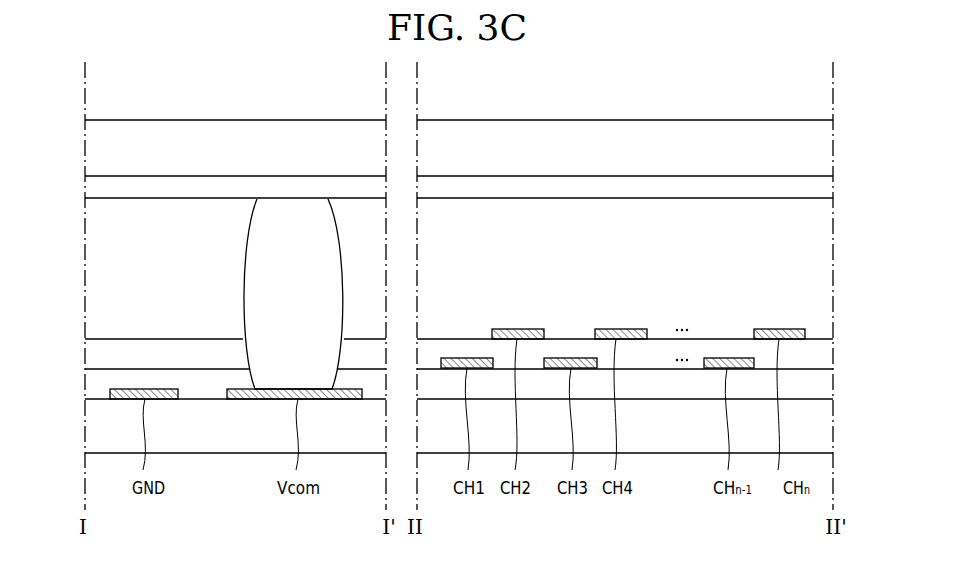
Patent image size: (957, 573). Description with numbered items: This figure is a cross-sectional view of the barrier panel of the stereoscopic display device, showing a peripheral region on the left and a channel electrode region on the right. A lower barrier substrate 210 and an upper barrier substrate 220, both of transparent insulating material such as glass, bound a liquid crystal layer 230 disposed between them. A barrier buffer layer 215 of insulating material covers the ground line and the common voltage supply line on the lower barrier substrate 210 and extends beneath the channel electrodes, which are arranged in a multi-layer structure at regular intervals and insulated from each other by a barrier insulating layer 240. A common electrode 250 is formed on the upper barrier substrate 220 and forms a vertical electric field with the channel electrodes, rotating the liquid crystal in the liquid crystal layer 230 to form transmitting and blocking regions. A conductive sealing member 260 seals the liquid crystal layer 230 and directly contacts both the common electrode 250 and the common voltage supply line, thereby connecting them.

The lower barrier substrate 210 is at (825, 430).
The barrier buffer layer 215 is at (825, 385).
The upper barrier substrate 220 is at (825, 155).
The liquid crystal layer 230 is at (825, 262).
The barrier insulating layer 240 is at (825, 353).
The common electrode 250 is at (825, 192).
The sealing member 260 is at (258, 296).